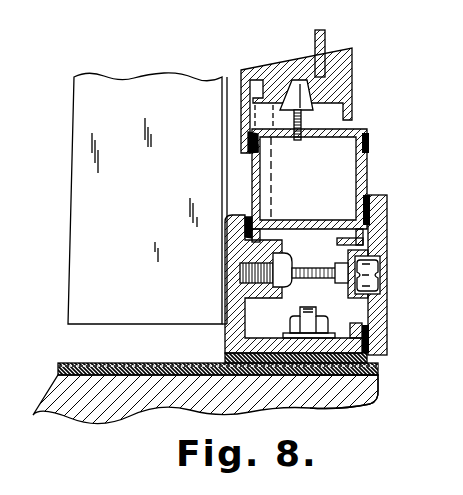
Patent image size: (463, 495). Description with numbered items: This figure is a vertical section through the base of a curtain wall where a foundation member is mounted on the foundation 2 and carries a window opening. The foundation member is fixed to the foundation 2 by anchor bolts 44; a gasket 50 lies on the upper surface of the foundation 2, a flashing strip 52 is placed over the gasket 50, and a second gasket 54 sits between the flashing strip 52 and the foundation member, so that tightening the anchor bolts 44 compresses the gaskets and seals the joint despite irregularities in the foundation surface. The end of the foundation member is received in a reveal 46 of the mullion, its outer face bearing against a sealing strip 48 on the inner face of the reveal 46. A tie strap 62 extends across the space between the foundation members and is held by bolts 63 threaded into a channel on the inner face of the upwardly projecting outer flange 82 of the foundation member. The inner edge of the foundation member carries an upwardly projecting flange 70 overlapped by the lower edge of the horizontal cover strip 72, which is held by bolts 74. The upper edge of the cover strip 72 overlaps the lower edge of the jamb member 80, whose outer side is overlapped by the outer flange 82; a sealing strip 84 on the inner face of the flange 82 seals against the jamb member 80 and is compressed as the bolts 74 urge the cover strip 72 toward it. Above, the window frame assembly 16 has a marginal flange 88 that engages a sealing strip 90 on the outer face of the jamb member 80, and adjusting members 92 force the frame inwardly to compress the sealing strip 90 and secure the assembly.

The foundation 2 is at (350, 400).
The window frame assembly 16 is at (352, 86).
The anchor bolts 44 is at (296, 320).
The reveals 46 is at (240, 171).
The sealing strips 48 is at (232, 279).
The gasket 50 is at (144, 377).
The flashing strip 52 is at (133, 364).
The second gasket 54 is at (226, 358).
The tie strap 62 is at (284, 253).
The bolts 63 is at (292, 267).
The upwardly projecting flanges 70 is at (360, 328).
The horizontal cover strip 72 is at (384, 211).
The bolts 74 is at (342, 281).
The jamb member 80 is at (364, 180).
The outer flange 82 is at (233, 245).
The sealing strip 84 is at (249, 218).
The marginal flange 88 is at (247, 136).
The sealing strip 90 is at (251, 150).
The adjusting members 92 is at (304, 103).